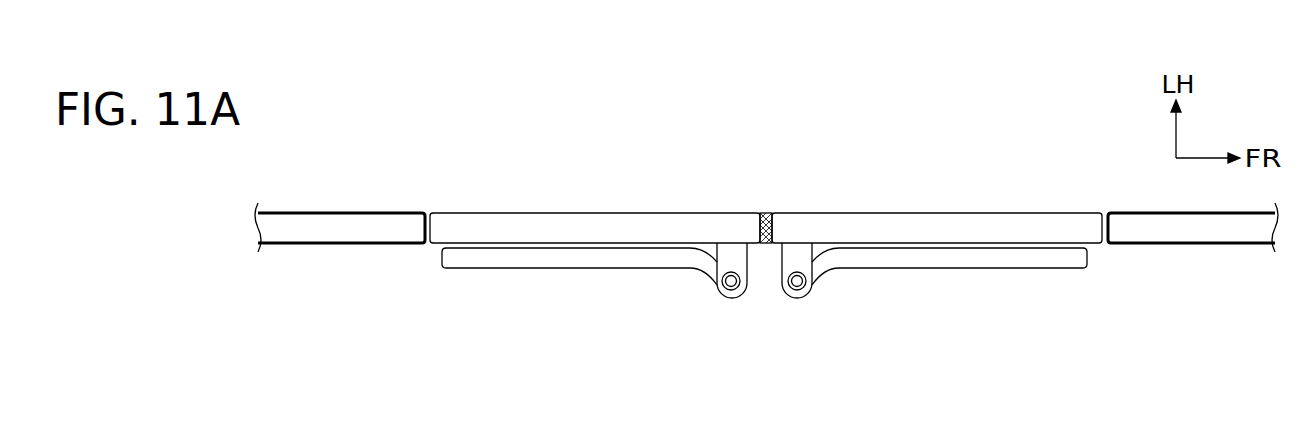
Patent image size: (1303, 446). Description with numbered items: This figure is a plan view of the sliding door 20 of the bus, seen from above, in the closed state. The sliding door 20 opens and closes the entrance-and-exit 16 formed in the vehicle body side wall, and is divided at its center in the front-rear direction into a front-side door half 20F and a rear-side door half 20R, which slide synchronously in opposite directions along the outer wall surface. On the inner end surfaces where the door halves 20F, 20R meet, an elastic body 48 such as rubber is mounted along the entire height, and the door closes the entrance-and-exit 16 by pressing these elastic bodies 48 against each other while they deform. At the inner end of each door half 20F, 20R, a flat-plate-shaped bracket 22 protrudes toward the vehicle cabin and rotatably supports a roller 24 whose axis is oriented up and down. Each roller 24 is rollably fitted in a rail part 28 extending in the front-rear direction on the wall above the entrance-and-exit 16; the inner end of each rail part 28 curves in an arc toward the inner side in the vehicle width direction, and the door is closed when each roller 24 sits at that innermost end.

The entrance-and-exit 16 is at (1105, 246).
The sliding door 20 is at (766, 160).
The rear-side door half 20R is at (682, 213).
The front-side door half 20F is at (937, 180).
The elastic body 48 is at (763, 213).
The rail part 28 is at (528, 270).
The roller 24 is at (740, 263).
The bracket 22 is at (743, 285).